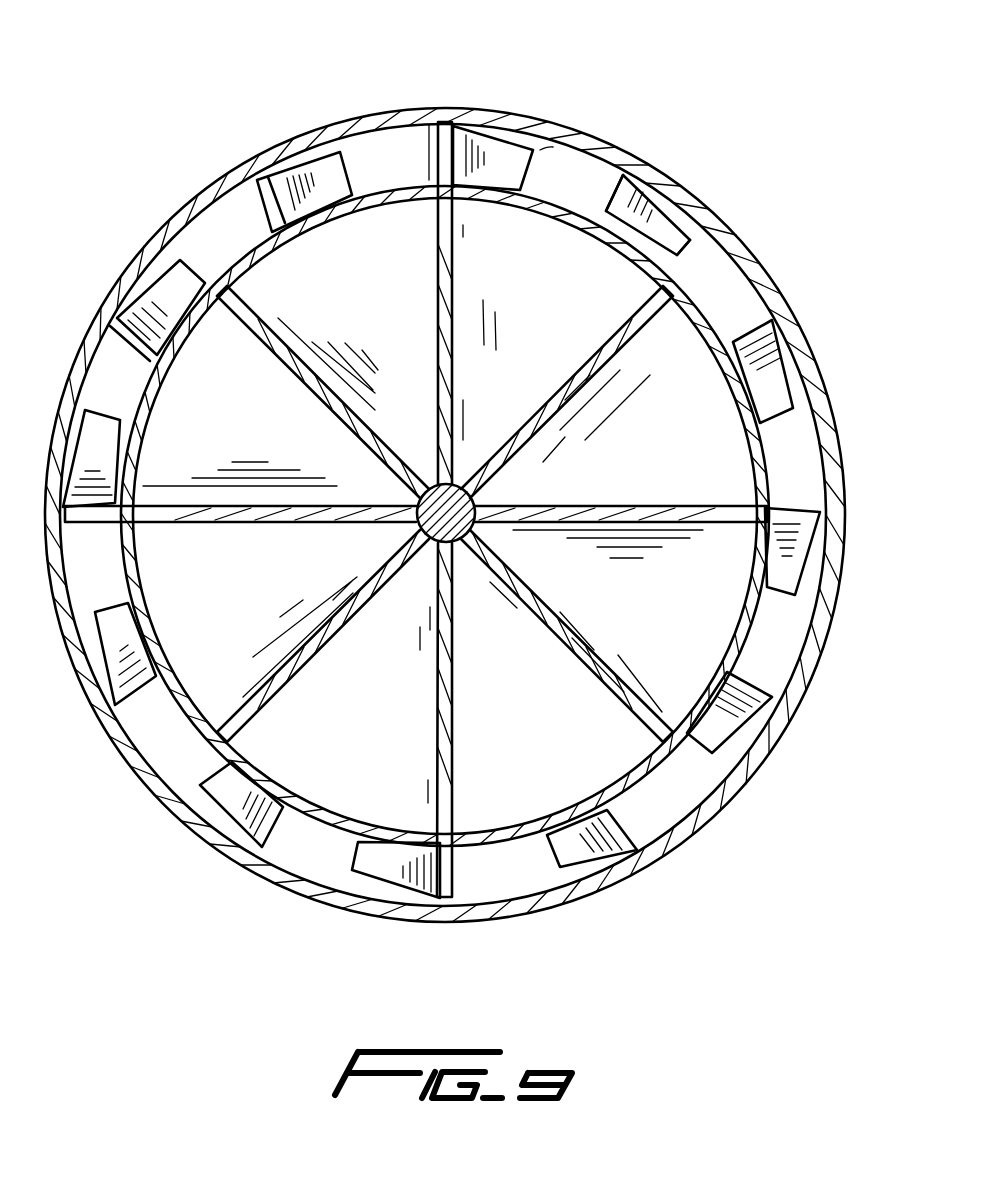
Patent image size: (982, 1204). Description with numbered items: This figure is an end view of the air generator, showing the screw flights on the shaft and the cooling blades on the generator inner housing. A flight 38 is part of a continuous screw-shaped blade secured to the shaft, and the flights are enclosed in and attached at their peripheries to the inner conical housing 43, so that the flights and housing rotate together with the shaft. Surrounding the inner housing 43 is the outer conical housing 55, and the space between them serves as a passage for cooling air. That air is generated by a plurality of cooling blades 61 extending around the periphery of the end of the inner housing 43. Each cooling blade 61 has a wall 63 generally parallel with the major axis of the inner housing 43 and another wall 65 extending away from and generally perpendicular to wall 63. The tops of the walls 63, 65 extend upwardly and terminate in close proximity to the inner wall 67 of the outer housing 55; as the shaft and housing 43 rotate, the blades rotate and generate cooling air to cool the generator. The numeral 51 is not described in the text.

The flight 38 is at (457, 762).
The inner conical housing 43 is at (570, 218).
The outer housing 51 is at (627, 150).
The outer conical housing 55 is at (498, 112).
The cooling blade 61 is at (673, 213).
The wall 63 is at (605, 190).
The wall 65 is at (673, 248).
The inner wall 67 is at (553, 147).